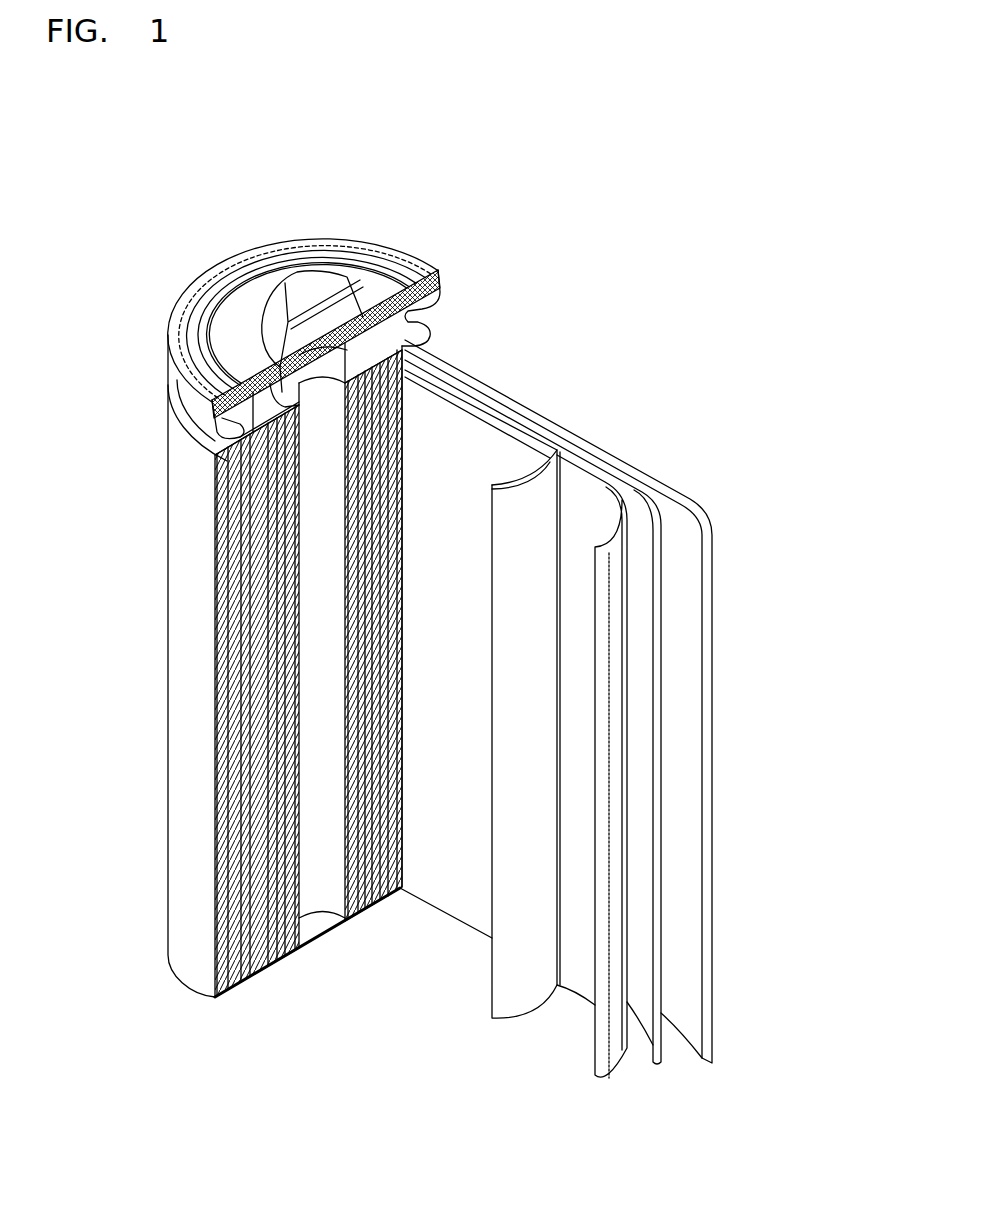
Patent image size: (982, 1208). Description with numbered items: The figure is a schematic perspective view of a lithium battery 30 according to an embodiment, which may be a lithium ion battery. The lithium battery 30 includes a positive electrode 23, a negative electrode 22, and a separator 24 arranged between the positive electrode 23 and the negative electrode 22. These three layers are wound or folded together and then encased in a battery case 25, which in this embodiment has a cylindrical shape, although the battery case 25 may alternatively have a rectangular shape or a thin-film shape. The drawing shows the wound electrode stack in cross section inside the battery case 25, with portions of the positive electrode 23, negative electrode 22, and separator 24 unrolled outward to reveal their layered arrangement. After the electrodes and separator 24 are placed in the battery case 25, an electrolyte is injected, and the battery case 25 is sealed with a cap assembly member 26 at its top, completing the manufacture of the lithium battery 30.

The lithium battery 30 is at (353, 187).
The negative electrode 22 is at (694, 505).
The positive electrode 23 is at (578, 467).
The separator 24 is at (633, 477).
The battery case 25 is at (183, 670).
The cap assembly member 26 is at (303, 290).